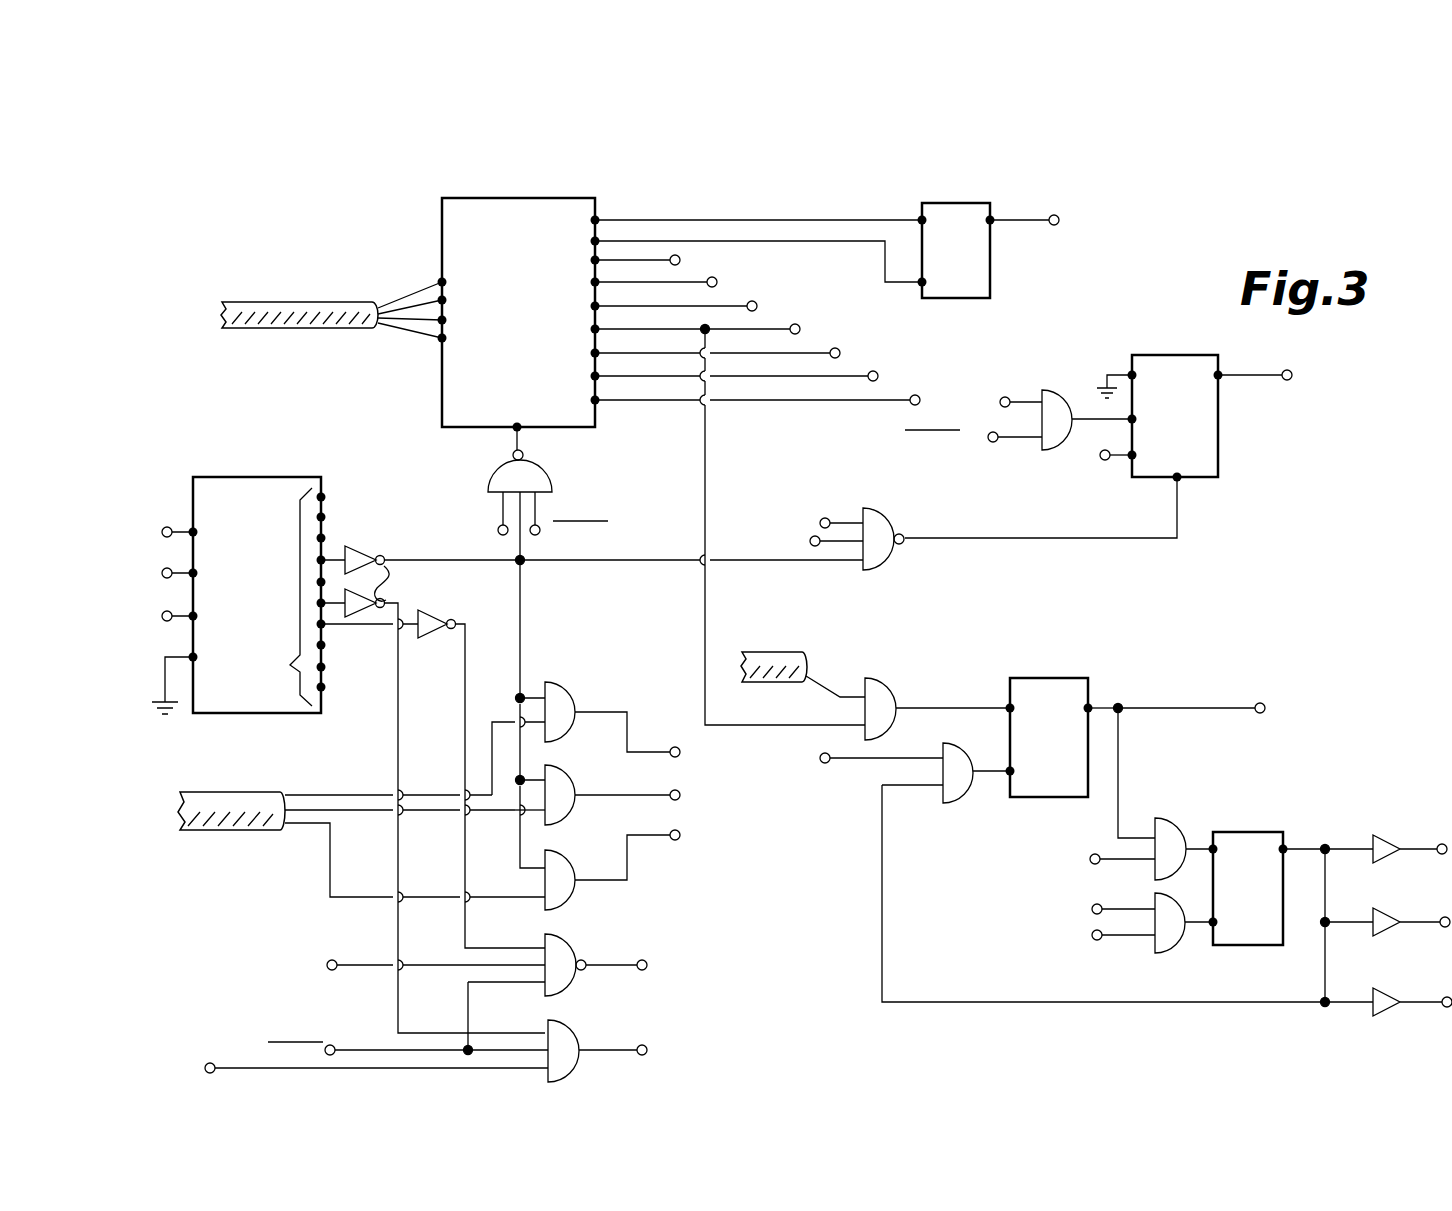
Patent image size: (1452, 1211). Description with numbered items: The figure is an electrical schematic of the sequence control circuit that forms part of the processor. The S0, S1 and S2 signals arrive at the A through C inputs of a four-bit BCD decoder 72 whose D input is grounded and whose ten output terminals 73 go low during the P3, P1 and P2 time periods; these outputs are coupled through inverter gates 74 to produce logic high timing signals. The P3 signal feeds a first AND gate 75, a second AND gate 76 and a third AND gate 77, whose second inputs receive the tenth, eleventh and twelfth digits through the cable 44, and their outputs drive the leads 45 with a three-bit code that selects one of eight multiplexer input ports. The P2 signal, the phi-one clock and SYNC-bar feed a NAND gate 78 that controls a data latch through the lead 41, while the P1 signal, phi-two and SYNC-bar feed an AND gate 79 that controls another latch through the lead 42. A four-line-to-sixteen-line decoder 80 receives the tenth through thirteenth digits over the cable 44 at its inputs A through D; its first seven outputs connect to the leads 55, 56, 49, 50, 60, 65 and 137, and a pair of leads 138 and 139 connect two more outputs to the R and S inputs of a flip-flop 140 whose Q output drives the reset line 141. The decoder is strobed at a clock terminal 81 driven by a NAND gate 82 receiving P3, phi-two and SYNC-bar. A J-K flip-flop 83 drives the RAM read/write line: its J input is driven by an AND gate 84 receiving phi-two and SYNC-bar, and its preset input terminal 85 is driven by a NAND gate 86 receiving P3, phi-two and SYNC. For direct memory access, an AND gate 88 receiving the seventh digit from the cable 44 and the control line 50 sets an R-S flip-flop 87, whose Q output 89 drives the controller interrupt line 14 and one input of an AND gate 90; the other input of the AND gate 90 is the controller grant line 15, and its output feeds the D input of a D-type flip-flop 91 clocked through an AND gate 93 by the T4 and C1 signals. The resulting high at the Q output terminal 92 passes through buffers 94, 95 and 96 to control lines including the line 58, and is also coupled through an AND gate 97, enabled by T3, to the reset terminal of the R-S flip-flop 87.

The four-line-to-sixteen-line decoder 80 is at (442, 222).
The cable 44 is at (309, 300).
The lead 138 is at (660, 220).
The lead 139 is at (768, 244).
The lead 55 is at (682, 260).
The lead 56 is at (719, 281).
The lead 49 is at (759, 305).
The control line 50 is at (802, 329).
The lead 60 is at (842, 353).
The lead 65 is at (880, 375).
The lead 137 is at (921, 397).
The flip-flop 140 is at (975, 258).
The reset line 141 is at (1056, 226).
The AND gate 84 is at (1062, 393).
The J-K flip-flop 83 is at (1200, 419).
The preset input terminal 85 is at (1183, 481).
The NAND gate 86 is at (897, 560).
The four-bit BCD decoder 72 is at (287, 477).
The output terminals 73 is at (298, 667).
The inverter gates 74 is at (438, 612).
The clock terminal 81 is at (503, 438).
The NAND gate 82 is at (488, 483).
The first AND gate 75 is at (574, 690).
The second AND gate 76 is at (574, 783).
The third AND gate 77 is at (574, 867).
The leads 45 is at (683, 754).
The NAND gate 78 is at (574, 950).
The AND gate 79 is at (577, 1036).
The lead 41 is at (648, 964).
The lead 42 is at (648, 1046).
The AND gate 88 is at (886, 690).
The R-S flip-flop 87 is at (1060, 748).
The Q output 89 is at (1092, 703).
The controller interrupt line 14 is at (1266, 706).
The AND gate 97 is at (960, 805).
The AND gate 90 is at (1173, 823).
The controller grant line 15 is at (1090, 856).
The D-type flip-flop 91 is at (1268, 911).
The AND gate 93 is at (1175, 952).
The Q output terminal 92 is at (1287, 846).
The buffer 94 is at (1372, 842).
The line 58 is at (1442, 843).
The buffer 95 is at (1372, 917).
The buffer 96 is at (1372, 997).